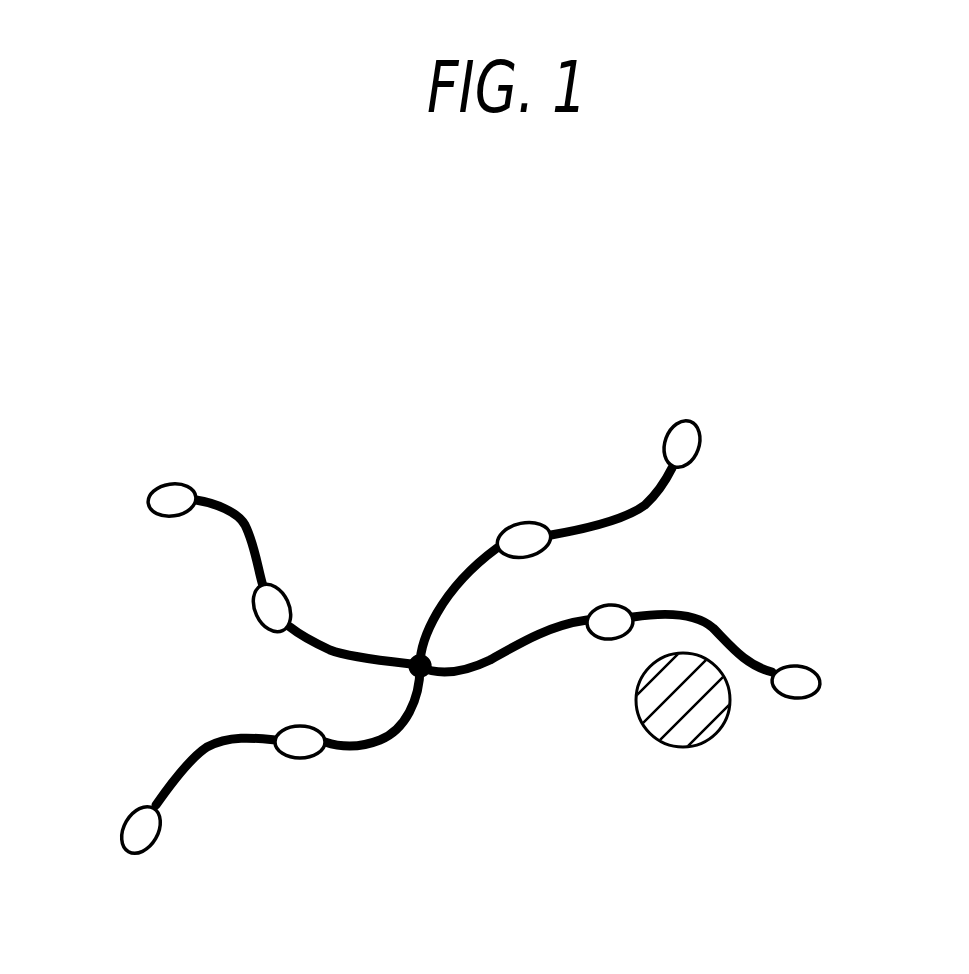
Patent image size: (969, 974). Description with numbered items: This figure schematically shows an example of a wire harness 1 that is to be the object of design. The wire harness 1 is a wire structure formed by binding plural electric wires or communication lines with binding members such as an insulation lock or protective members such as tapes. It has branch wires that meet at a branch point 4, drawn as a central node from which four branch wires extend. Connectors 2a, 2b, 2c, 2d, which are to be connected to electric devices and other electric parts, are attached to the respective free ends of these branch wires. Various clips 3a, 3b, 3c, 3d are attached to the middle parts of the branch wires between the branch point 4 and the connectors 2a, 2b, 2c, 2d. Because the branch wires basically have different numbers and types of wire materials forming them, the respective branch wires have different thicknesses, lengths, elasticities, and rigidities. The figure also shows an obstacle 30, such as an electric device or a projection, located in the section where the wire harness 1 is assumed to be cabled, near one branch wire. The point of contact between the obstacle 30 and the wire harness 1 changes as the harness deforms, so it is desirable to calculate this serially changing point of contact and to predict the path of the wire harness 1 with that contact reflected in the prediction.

The wire harness 1 is at (262, 514).
The connector 2a is at (177, 482).
The connector 2b is at (803, 665).
The connector 2c is at (700, 443).
The connector 2d is at (123, 847).
The clip 3a is at (285, 593).
The clip 3b is at (620, 603).
The clip 3c is at (525, 518).
The clip 3d is at (297, 762).
The branch point 4 is at (423, 678).
The obstacle 30 is at (723, 730).